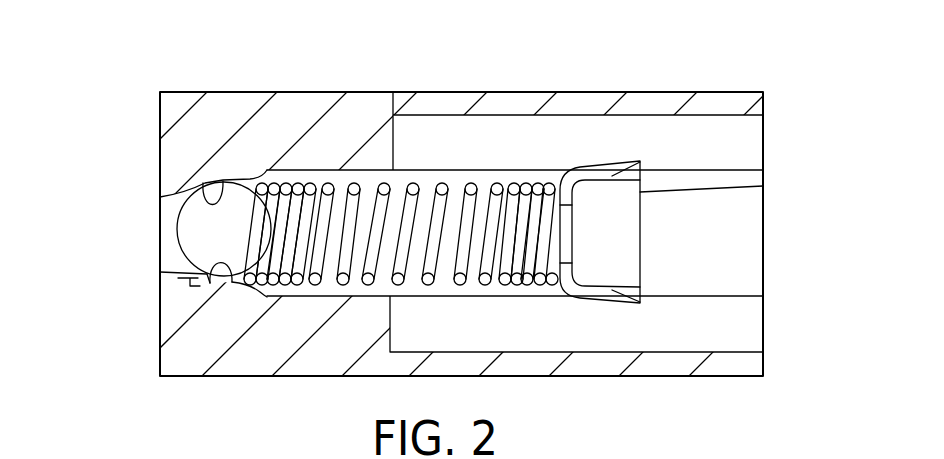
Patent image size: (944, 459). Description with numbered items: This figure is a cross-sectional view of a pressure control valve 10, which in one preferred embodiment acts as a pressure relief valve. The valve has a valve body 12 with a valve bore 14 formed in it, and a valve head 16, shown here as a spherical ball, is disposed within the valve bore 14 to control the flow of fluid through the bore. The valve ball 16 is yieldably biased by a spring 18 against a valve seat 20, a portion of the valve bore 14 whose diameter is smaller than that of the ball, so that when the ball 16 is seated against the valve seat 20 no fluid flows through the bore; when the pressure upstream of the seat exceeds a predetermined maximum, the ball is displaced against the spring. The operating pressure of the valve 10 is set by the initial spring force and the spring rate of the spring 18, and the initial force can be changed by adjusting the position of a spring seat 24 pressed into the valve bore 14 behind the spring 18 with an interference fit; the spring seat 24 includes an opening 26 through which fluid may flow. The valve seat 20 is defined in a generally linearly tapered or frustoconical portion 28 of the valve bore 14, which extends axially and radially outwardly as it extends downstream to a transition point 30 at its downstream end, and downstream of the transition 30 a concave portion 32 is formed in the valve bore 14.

The pressure control valve 10 is at (684, 65).
The valve body 12 is at (334, 365).
The valve bore 14 is at (175, 200).
The valve head 16 is at (205, 240).
The spring 18 is at (413, 196).
The valve seat 20 is at (224, 188).
The spring seat 24 is at (602, 176).
The opening 26 is at (566, 243).
The frustoconical portion 28 is at (205, 279).
The transition point 30 is at (227, 284).
The concave portion 32 is at (258, 281).